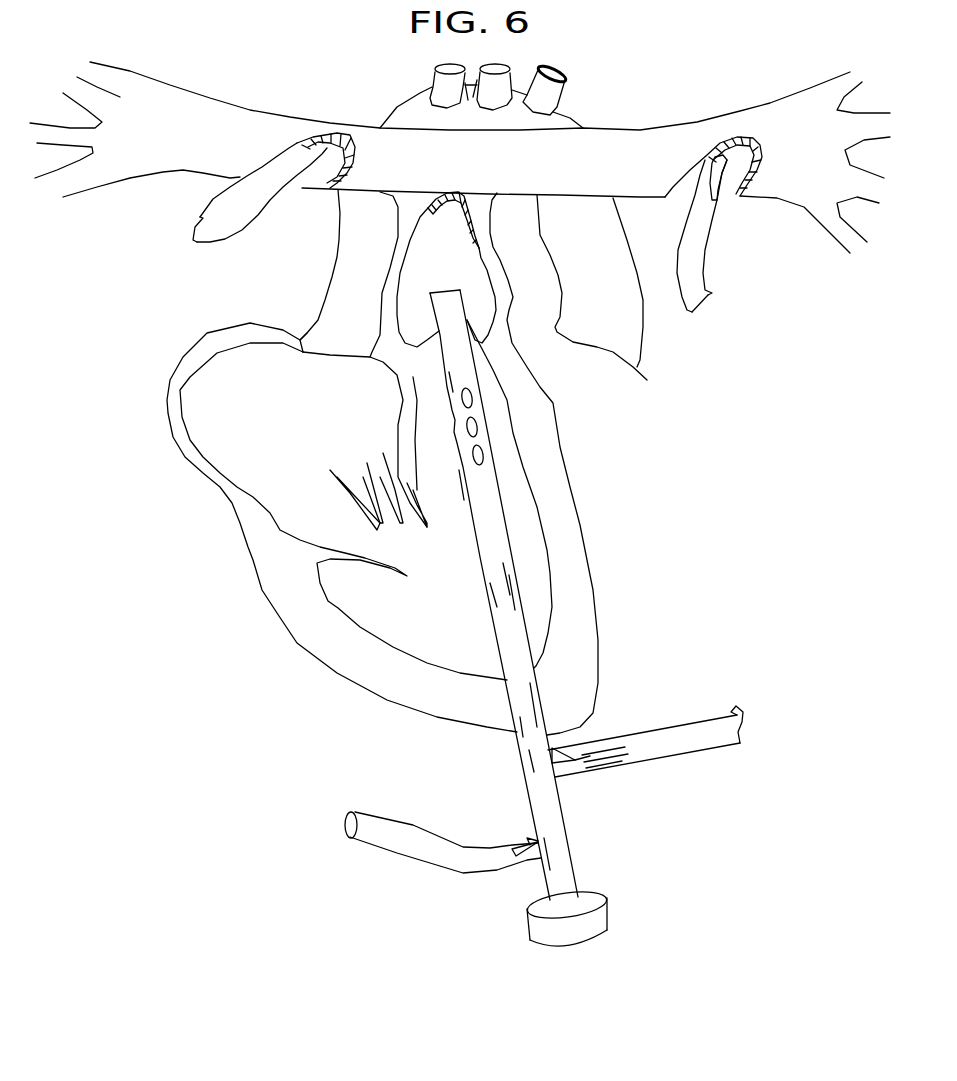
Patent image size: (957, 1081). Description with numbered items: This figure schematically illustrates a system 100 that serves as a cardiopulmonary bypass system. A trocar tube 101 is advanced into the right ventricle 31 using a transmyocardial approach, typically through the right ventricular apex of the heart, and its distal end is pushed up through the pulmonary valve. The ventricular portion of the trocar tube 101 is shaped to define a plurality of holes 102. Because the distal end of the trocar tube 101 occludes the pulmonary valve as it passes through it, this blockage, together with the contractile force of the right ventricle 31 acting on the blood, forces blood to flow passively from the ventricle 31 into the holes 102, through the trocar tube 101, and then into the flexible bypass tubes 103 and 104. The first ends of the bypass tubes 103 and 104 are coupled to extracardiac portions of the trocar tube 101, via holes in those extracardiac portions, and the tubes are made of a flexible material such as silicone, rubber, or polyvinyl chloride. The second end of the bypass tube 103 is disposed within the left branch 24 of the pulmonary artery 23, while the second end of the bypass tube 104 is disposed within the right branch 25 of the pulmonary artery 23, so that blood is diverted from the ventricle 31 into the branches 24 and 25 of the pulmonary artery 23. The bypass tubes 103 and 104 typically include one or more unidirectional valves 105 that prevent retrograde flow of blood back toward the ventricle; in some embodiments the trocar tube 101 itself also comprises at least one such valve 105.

The pulmonary artery 23 is at (493, 269).
The left branch 24 is at (490, 157).
The right branch 25 is at (171, 135).
The right ventricle 31 is at (342, 527).
The system 100 is at (545, 618).
The trocar tube 101 is at (486, 621).
The holes 102 is at (539, 424).
The bypass tube 103 is at (659, 457).
The bypass tube 104 is at (367, 513).
The unidirectional valve 105 is at (561, 802).